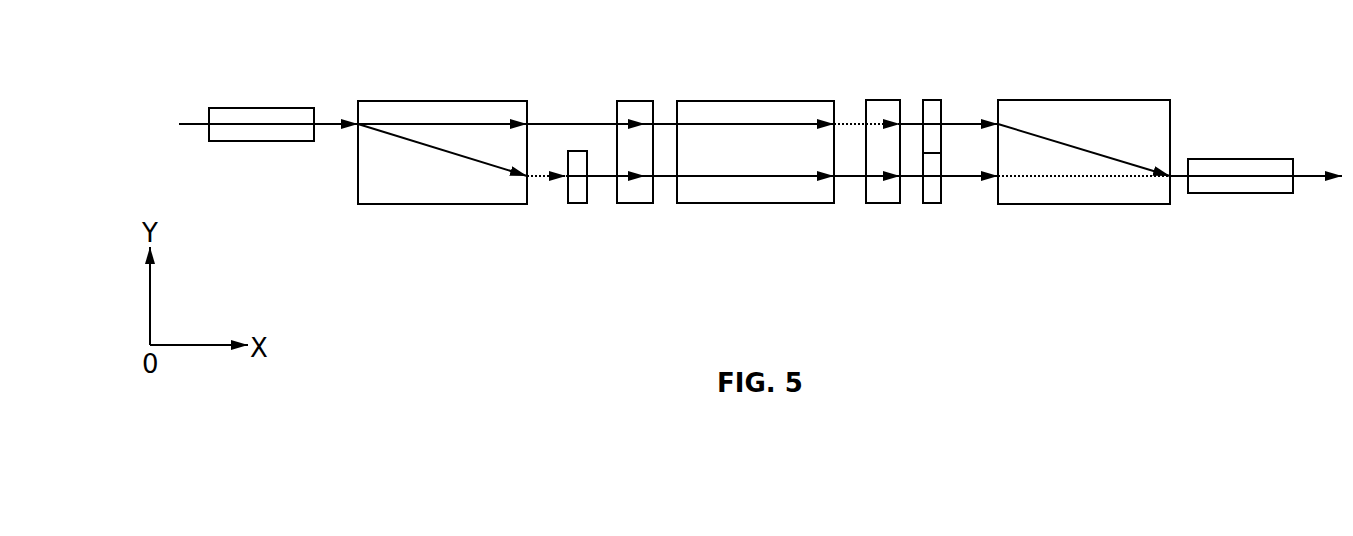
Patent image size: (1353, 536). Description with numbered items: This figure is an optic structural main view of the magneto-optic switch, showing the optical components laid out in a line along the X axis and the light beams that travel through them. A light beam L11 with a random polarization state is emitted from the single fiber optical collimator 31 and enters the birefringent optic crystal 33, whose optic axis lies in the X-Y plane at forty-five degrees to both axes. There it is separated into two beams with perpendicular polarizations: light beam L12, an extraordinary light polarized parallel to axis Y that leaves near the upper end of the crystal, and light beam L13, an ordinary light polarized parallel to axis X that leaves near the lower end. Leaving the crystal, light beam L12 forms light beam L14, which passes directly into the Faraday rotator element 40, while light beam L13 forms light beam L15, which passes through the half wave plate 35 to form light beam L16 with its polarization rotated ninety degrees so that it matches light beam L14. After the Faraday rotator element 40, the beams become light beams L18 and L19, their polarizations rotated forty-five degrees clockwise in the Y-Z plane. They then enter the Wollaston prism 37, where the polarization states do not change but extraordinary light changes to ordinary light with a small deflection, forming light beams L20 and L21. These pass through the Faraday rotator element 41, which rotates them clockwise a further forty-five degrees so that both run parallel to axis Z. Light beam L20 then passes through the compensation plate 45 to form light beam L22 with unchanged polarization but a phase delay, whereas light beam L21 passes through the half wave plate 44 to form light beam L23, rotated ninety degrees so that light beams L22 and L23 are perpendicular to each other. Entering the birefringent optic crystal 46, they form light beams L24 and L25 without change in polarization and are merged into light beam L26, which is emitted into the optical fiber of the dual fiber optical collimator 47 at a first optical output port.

The single fiber optical collimator 31 is at (240, 113).
The birefringent optic crystal 33 is at (385, 107).
The half wave plate 35 is at (580, 195).
The Faraday rotator element 40 is at (632, 110).
The Wollaston prism 37 is at (788, 115).
The Faraday rotator element 41 is at (878, 113).
The compensation plate 45 is at (928, 107).
The half wave plate 44 is at (933, 198).
The birefringent optic crystal 46 is at (1157, 125).
The dual fiber optical collimator 47 is at (1228, 163).
The light beam L11 is at (280, 127).
The light beam L12 is at (460, 122).
The light beam L13 is at (435, 150).
The light beam L14 is at (570, 120).
The light beam L15 is at (545, 178).
The light beam L16 is at (597, 177).
The light beam L18 is at (693, 122).
The light beam L19 is at (755, 178).
The light beam L20 is at (850, 122).
The light beam L21 is at (882, 178).
The light beam L22 is at (957, 118).
The light beam L23 is at (957, 180).
The light beam L24 is at (1055, 138).
The light beam L25 is at (1068, 178).
The light beam L26 is at (1233, 177).